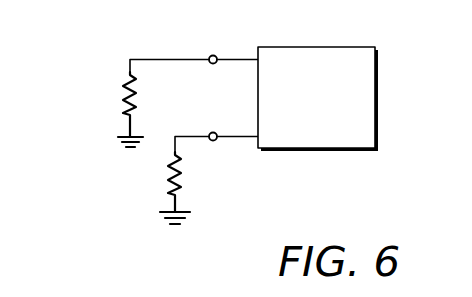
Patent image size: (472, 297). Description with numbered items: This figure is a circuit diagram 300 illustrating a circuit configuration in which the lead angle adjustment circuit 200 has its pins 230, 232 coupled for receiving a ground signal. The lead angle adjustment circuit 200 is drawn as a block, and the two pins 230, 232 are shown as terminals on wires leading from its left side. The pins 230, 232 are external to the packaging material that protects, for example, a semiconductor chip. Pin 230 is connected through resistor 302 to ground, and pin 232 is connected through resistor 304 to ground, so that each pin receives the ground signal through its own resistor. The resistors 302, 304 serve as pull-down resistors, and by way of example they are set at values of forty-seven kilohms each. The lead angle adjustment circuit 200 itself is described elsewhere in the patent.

The lead angle adjustment circuit 200 is at (342, 47).
The pin 230 is at (213, 54).
The pin 232 is at (213, 131).
The circuit diagram 300 is at (441, 206).
The resistor 302 is at (123, 89).
The resistor 304 is at (181, 177).